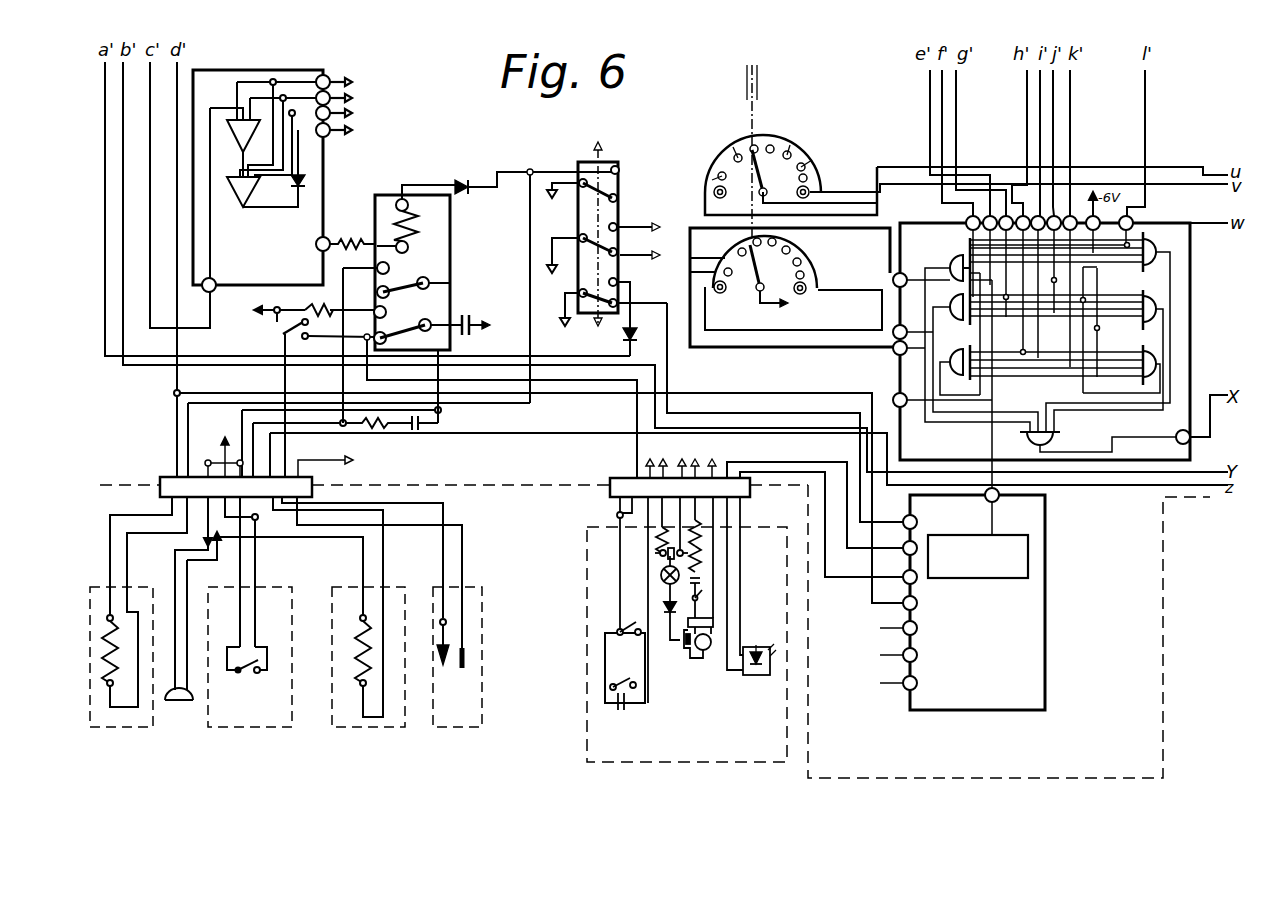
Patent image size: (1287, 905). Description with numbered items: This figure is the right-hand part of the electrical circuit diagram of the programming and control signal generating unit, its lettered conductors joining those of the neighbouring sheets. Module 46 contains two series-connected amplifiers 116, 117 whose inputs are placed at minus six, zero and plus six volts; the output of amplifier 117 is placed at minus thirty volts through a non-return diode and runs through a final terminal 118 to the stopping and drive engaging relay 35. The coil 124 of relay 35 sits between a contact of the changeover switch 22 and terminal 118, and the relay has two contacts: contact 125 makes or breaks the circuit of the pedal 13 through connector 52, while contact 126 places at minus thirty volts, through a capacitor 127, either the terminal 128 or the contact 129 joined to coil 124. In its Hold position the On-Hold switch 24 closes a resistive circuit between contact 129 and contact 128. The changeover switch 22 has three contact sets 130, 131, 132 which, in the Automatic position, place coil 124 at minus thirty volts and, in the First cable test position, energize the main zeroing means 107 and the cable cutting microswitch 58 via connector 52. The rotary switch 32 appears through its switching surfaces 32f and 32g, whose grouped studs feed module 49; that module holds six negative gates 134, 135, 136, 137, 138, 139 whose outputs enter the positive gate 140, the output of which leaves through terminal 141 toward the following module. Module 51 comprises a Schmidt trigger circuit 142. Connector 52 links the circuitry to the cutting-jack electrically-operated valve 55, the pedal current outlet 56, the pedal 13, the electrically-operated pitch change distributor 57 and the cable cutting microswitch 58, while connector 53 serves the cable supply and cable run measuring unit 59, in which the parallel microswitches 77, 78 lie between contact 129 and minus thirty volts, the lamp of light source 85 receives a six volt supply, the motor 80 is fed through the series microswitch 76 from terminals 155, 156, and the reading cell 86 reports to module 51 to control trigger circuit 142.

The module 46 is at (278, 268).
The amplifier 116 is at (245, 128).
The amplifier 117 is at (247, 200).
The terminal 118 is at (328, 238).
The stop relay 35 is at (490, 256).
The coil 124 is at (433, 221).
The contact 125 is at (392, 284).
The contact 126 is at (425, 300).
The capacitor 127 is at (466, 316).
The terminal 128 is at (370, 310).
The contact 129 is at (369, 334).
The changeover switch 22 is at (577, 238).
The set of contacts 130 is at (622, 190).
The set of contacts 131 is at (622, 226).
The set of contacts 132 is at (622, 292).
The main zeroing means 107 is at (654, 244).
The On-Hold switch 24 is at (283, 334).
The rotary switch 32 is at (858, 272).
The switching surface 32f is at (791, 175).
The switching surface 32g is at (765, 271).
The module 49 is at (930, 247).
The negative gate 134 is at (958, 252).
The negative gate 135 is at (955, 296).
The negative gate 136 is at (958, 347).
The negative gate 137 is at (1158, 258).
The negative gate 138 is at (1158, 308).
The negative gate 139 is at (1157, 362).
The positive gate 140 is at (1050, 438).
The terminal 141 is at (1176, 441).
The Schmidt trigger circuit 142 is at (997, 569).
The module 51 is at (1034, 633).
The quick-disconnect connector 52 is at (164, 478).
The quick-disconnect connector 53 is at (632, 478).
The terminal 155 is at (696, 462).
The terminal 156 is at (718, 462).
The cutting-jack electrically-operated valve 55 is at (116, 725).
The pedal current outlet 56 is at (180, 704).
The pedal 13 is at (266, 712).
The electrically-operated pitch change distributor 57 is at (372, 724).
The cable cutting microswitch 58 is at (458, 724).
The cable supply and cable run measuring unit 59 is at (756, 754).
The microswitch 77 is at (632, 628).
The microswitch 78 is at (625, 671).
The microswitch 76 is at (671, 604).
The light source 85 is at (688, 588).
The motor 80 is at (706, 658).
The reading cell 86 is at (760, 678).